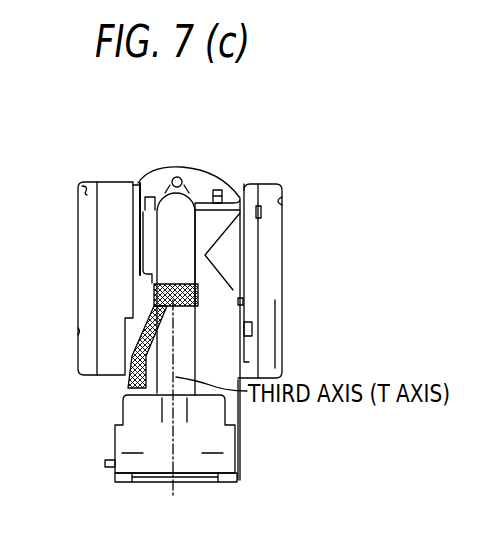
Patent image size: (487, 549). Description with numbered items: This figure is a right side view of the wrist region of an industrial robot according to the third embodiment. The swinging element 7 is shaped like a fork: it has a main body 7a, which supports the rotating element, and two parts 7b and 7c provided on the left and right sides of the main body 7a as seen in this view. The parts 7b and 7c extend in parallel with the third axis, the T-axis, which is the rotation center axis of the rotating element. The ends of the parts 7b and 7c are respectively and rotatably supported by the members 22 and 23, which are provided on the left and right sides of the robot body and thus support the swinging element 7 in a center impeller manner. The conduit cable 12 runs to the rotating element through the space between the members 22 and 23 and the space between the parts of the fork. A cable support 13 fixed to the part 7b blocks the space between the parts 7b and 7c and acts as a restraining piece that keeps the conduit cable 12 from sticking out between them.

The swinging element 7 is at (239, 463).
The main body 7a is at (202, 436).
The part 7b is at (139, 182).
The part 7c is at (224, 220).
The conduit cable 12 is at (188, 183).
The cable support 13 is at (199, 293).
The member 22 is at (90, 219).
The member 23 is at (273, 246).